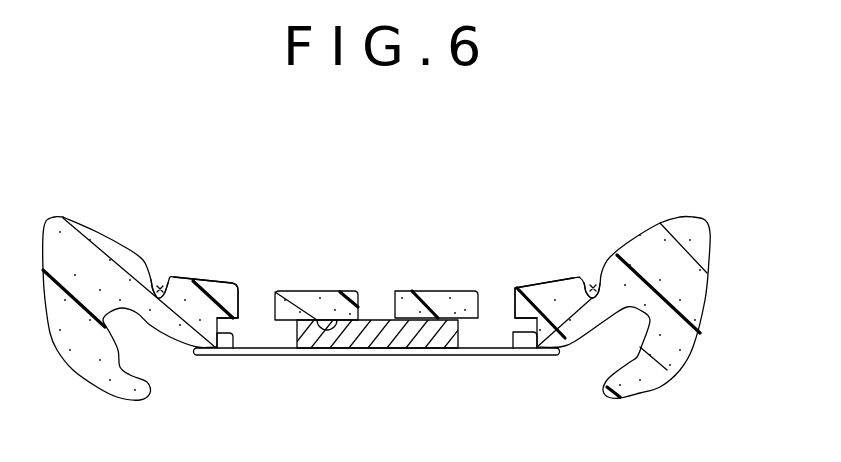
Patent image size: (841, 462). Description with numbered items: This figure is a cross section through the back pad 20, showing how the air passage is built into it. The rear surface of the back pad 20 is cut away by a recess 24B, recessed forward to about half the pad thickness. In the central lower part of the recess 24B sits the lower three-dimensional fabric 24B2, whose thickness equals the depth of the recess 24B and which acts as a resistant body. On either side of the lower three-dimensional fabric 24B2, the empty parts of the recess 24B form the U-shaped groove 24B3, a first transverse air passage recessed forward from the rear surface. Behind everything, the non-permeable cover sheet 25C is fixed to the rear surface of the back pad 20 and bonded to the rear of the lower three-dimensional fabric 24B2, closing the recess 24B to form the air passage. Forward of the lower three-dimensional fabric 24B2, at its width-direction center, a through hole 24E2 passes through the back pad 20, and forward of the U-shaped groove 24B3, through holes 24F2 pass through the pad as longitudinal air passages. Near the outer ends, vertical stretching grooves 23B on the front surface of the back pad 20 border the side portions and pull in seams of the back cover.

The back pad 20 is at (662, 212).
The vertical stretching groove 23B is at (159, 283).
The through hole 24F2 is at (239, 305).
The U-shaped groove 24B3 is at (228, 343).
The recess 24B is at (313, 300).
The through hole 24E2 is at (395, 303).
The lower three-dimensional fabric 24B2 is at (405, 332).
The cover sheet 25C is at (342, 352).